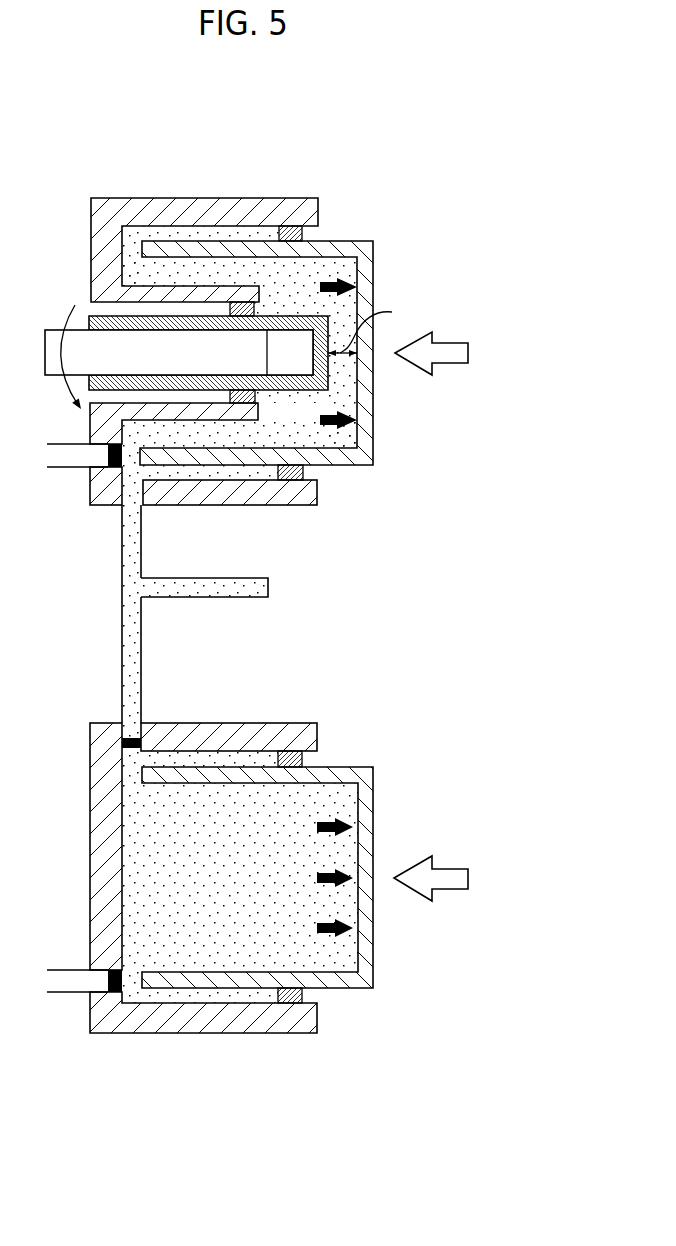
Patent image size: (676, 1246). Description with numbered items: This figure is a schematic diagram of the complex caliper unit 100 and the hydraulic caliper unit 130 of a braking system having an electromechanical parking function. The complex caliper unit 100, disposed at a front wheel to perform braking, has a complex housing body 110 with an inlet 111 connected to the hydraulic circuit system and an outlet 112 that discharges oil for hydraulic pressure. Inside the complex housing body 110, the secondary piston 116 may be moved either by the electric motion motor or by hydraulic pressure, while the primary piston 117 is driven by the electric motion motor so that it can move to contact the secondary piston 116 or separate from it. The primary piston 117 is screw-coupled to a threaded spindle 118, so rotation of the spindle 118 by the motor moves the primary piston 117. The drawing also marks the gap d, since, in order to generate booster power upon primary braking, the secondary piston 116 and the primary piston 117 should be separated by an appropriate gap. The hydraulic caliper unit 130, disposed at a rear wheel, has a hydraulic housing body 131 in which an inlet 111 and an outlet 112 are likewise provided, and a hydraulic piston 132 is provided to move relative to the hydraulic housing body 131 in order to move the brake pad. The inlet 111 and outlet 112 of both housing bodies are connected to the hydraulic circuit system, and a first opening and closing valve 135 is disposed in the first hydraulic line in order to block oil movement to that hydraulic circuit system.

The complex caliper unit 100 is at (133, 170).
The complex housing body 110 is at (226, 198).
The inlet 111 is at (135, 493).
The outlet 112 is at (103, 453).
The secondary piston 116 is at (310, 393).
The primary piston 117 is at (340, 240).
The spindle 118 is at (215, 357).
The hydraulic caliper unit 130 is at (287, 685).
The hydraulic housing body 131 is at (210, 738).
The hydraulic piston 132 is at (350, 763).
The first opening and closing valve 135 is at (250, 585).